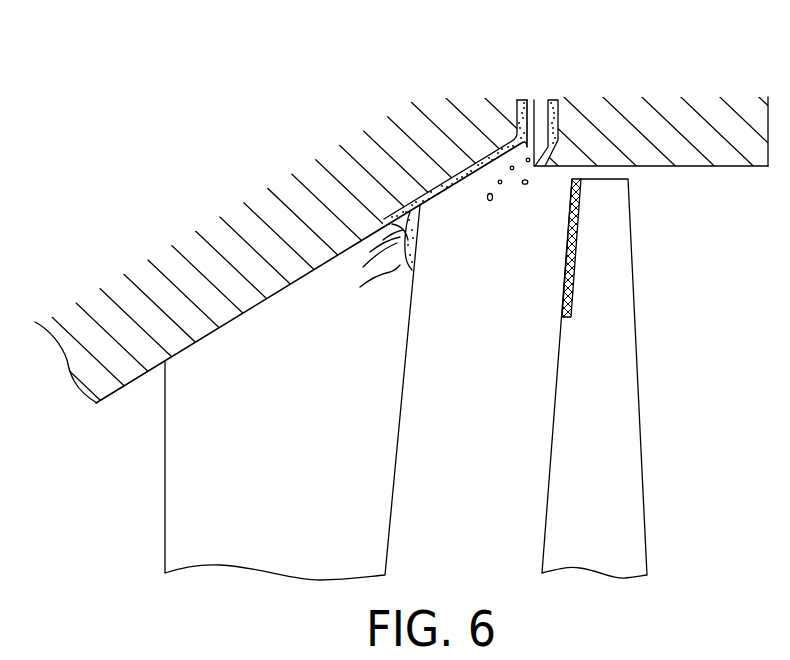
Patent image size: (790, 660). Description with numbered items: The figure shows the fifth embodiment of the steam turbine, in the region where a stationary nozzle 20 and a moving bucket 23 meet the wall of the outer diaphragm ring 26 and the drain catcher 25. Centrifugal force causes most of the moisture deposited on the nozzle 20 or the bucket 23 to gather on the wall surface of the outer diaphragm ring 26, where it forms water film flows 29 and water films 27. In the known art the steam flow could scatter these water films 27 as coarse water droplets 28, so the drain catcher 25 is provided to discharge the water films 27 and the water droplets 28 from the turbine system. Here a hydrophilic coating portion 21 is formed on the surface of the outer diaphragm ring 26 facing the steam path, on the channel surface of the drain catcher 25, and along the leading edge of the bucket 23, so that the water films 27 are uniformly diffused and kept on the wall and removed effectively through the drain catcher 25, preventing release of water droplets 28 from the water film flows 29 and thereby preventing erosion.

The nozzle 20 is at (384, 473).
The hydrophilic coating portion 21 is at (447, 181).
The bucket 23 is at (618, 412).
The drain catcher 25 is at (538, 106).
The outer diaphragm ring 26 is at (288, 207).
The water film 27 is at (446, 195).
The water droplet 28 is at (525, 186).
The water film flow 29 is at (376, 298).